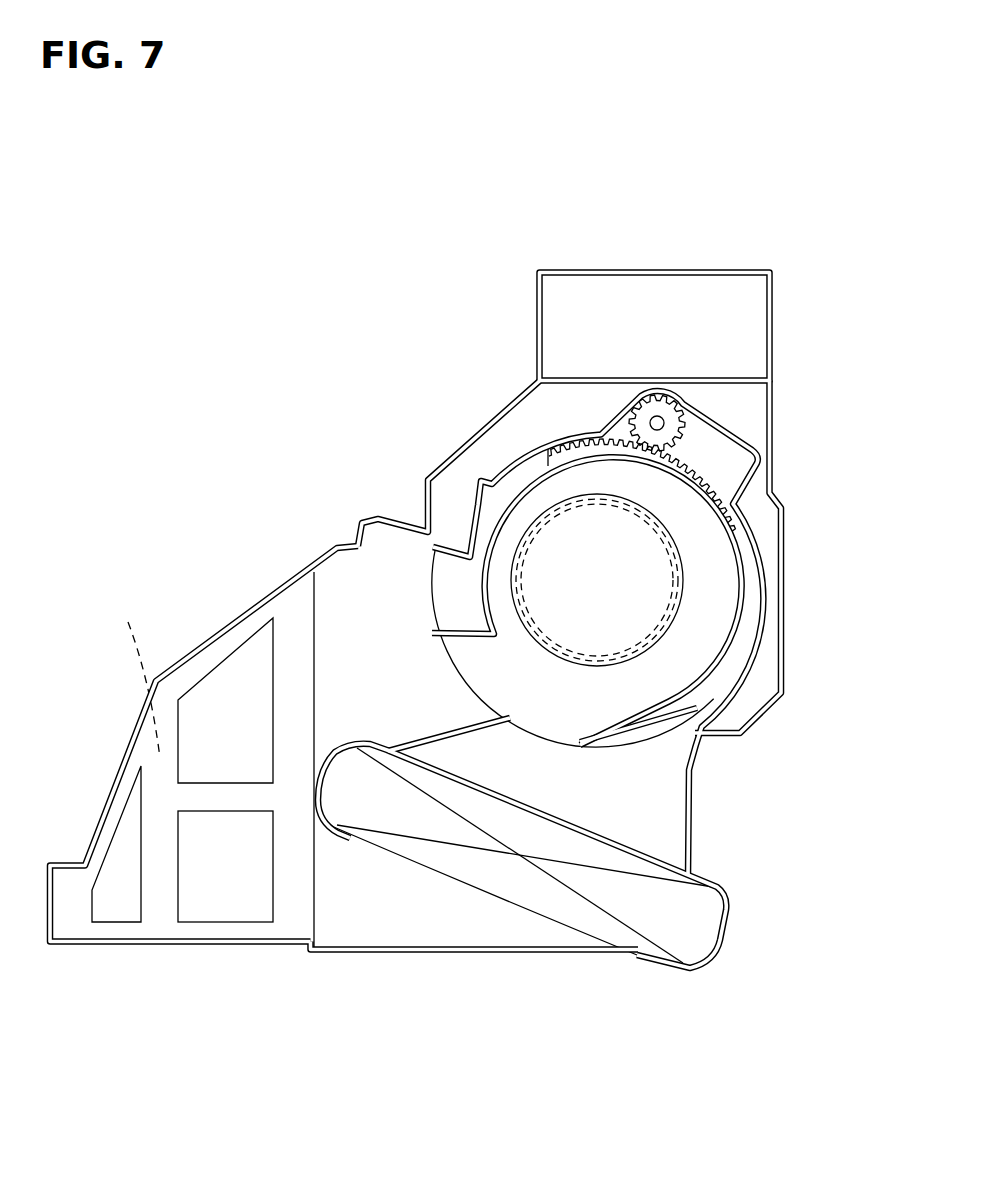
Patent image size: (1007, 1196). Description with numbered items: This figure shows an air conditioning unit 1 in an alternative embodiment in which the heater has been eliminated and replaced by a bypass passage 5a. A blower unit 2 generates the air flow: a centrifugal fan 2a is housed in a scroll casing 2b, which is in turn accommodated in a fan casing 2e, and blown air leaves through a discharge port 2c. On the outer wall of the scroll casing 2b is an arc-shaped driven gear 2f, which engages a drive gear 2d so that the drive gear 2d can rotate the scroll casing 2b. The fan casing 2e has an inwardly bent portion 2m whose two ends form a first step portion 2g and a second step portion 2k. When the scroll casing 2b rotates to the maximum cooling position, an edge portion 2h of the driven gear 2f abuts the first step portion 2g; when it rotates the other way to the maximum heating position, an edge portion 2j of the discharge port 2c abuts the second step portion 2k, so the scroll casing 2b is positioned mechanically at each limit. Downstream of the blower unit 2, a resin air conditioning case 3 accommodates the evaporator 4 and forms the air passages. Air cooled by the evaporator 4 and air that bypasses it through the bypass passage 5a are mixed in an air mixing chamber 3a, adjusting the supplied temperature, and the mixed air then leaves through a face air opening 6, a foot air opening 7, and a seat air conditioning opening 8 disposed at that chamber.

The air conditioning unit 1 is at (777, 295).
The blower unit 2 is at (755, 524).
The fan 2a is at (683, 606).
The scroll casing 2b is at (718, 675).
The discharge port 2c is at (550, 712).
The drive gear 2d is at (663, 422).
The fan casing 2e is at (497, 467).
The driven gear 2f is at (708, 482).
The first step portion 2g is at (485, 488).
The edge portion 2h is at (548, 460).
The edge portion 2j is at (433, 560).
The second step portion 2k is at (445, 540).
The bent portion 2m is at (477, 512).
The air conditioning case 3 is at (320, 556).
The air mixing chamber 3a is at (138, 679).
The evaporator 4 is at (687, 907).
The bypass passage 5a is at (384, 577).
The face air opening 6 is at (232, 887).
The foot air opening 7 is at (219, 690).
The seat air conditioning opening 8 is at (118, 892).